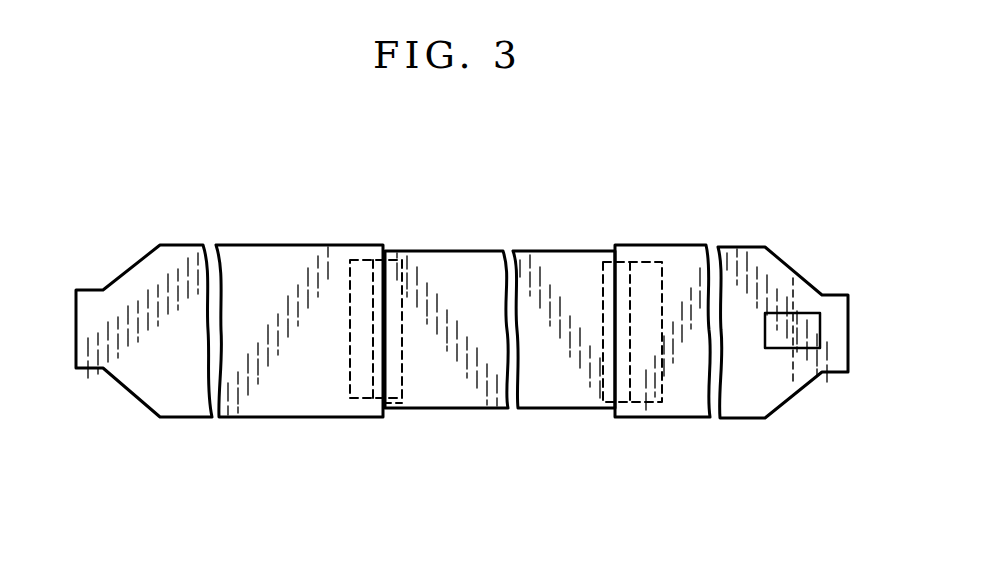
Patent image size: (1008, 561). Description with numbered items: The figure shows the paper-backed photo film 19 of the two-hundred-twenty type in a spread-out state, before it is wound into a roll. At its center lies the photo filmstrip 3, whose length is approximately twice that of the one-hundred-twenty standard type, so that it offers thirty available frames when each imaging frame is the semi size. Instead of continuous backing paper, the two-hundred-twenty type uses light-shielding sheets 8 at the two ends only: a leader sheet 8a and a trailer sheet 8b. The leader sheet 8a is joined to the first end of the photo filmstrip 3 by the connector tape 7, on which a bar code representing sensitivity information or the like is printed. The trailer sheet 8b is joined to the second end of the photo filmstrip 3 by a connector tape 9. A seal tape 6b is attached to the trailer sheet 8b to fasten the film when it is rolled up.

The photo filmstrip 3 is at (447, 263).
The seal tape 6b is at (809, 322).
The connector tape 7 is at (362, 402).
The light-shielding sheets 8 is at (688, 442).
The leader sheet 8a is at (187, 243).
The trailer sheet 8b is at (767, 402).
The connector tape 9 is at (648, 262).
The paper-backed photo film 19 is at (355, 220).